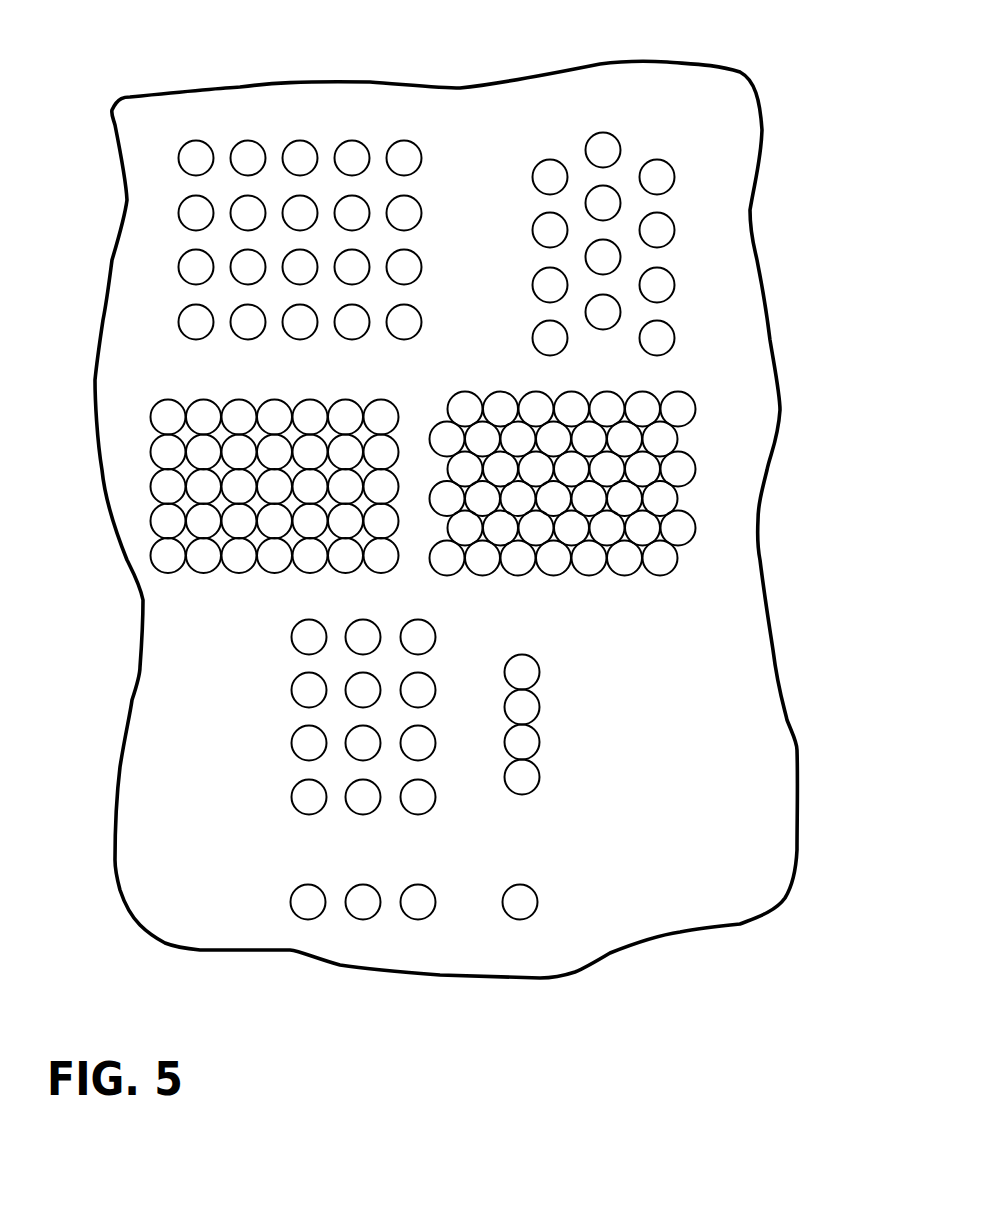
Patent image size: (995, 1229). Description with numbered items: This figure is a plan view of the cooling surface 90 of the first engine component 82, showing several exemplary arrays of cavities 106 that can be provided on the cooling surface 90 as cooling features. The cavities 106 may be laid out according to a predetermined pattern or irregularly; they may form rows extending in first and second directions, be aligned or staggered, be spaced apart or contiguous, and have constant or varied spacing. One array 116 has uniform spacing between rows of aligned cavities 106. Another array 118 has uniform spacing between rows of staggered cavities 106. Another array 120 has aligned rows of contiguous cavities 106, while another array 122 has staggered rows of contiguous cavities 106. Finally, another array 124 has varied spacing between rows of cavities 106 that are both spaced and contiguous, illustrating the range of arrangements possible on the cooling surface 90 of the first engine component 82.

The first engine component 82 is at (446, 494).
The cooling surface 90 is at (688, 111).
The cavities 106 is at (449, 532).
The array 116 is at (150, 229).
The array 118 is at (702, 255).
The array 120 is at (116, 455).
The array 122 is at (727, 464).
The array 124 is at (238, 766).